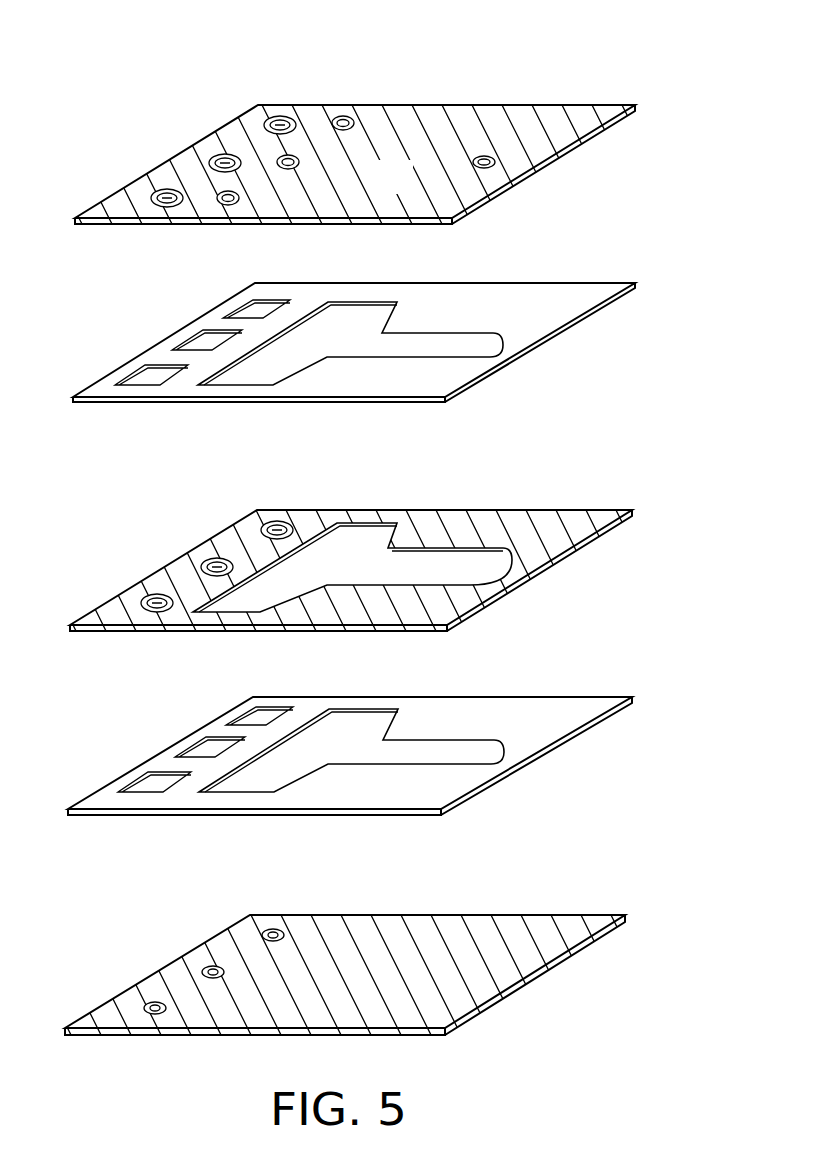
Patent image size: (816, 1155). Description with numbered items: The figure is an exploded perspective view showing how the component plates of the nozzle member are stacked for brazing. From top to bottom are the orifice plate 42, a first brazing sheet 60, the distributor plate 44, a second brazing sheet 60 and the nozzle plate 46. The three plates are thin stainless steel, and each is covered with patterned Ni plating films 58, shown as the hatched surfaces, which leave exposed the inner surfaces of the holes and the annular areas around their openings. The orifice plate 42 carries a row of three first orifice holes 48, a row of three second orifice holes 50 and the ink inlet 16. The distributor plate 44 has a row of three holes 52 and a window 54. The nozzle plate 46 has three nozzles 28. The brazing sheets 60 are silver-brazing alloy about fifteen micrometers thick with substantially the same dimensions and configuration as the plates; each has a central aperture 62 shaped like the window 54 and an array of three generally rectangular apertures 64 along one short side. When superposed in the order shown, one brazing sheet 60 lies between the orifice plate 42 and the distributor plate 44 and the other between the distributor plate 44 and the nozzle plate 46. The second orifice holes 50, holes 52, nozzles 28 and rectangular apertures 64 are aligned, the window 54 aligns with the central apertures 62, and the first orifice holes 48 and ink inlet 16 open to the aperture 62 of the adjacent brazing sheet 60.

The ink inlet 16 is at (487, 155).
The nozzles 28 is at (150, 1001).
The orifice plate 42 is at (598, 88).
The distributor plate 44 is at (516, 500).
The nozzle plate 46 is at (500, 905).
The first orifice holes 48 is at (291, 154).
The second orifice holes 50 is at (165, 189).
The holes 52 is at (152, 594).
The window 54 is at (365, 571).
The patterned Ni plating films 58 is at (410, 192).
The brazing sheets 60 is at (540, 271).
The aperture 62 is at (360, 344).
The rectangular apertures 64 is at (246, 311).